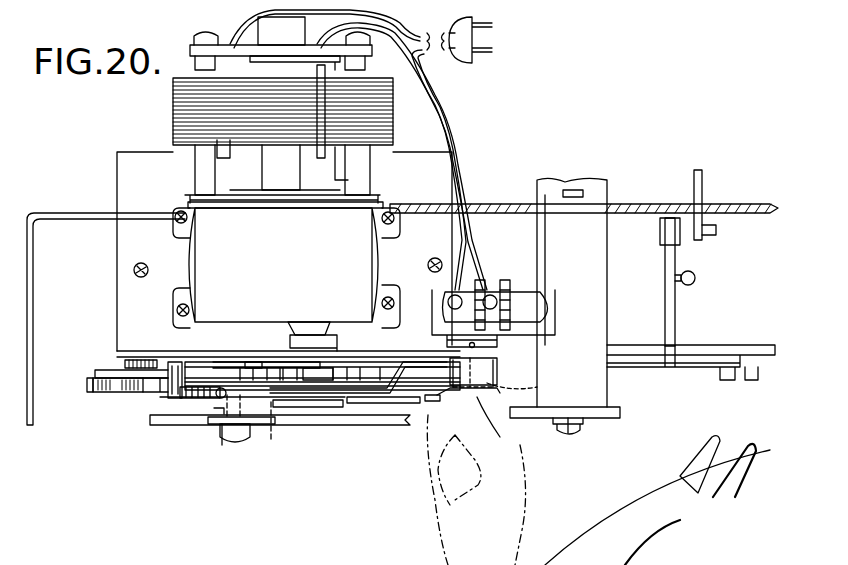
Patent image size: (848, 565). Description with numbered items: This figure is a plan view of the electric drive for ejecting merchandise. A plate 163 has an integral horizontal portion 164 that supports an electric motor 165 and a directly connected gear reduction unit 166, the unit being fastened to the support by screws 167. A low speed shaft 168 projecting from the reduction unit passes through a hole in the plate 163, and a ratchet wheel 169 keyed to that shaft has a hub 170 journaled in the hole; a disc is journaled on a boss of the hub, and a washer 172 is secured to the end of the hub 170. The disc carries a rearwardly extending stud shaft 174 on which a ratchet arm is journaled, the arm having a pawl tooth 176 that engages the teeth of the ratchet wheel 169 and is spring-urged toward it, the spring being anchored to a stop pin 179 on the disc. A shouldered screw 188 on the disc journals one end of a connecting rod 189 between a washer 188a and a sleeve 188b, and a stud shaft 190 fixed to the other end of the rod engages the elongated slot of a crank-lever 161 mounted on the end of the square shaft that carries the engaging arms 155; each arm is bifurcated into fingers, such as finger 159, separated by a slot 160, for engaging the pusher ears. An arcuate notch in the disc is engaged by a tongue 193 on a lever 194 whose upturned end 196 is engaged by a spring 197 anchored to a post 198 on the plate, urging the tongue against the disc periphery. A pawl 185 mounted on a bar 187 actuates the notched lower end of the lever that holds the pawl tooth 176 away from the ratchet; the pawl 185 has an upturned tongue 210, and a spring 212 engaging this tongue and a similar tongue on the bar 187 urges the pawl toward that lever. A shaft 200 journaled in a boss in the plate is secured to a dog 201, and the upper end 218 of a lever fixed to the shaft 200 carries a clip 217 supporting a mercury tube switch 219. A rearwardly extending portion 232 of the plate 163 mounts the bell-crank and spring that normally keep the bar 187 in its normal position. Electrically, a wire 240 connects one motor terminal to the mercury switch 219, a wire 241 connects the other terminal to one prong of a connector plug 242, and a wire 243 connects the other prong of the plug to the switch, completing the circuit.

The engaging arms 155 is at (618, 497).
The finger 159 is at (698, 446).
The slot 160 is at (730, 447).
The crank-lever 161 is at (602, 401).
The plate 163 is at (120, 358).
The horizontal portion 164 is at (125, 307).
The electric motor 165 is at (173, 118).
The gear reduction unit 166 is at (200, 243).
The screws 167 is at (178, 215).
The low speed shaft 168 is at (306, 326).
The ratchet wheel 169 is at (318, 370).
The hub 170 is at (321, 335).
The washer 172 is at (310, 407).
The stud shaft 174 is at (217, 372).
The pawl tooth 176 is at (271, 408).
The stop pin 179 is at (250, 372).
The pawl 185 is at (87, 384).
The bar 187 is at (93, 373).
The shouldered screw 188 is at (234, 447).
The washer 188a is at (225, 427).
The sleeve 188b is at (222, 400).
The connecting rod 189 is at (603, 422).
The stud shaft 190 is at (570, 434).
The tongue 193 is at (380, 426).
The lever 194 is at (388, 367).
The upturned end 196 is at (192, 396).
The spring 197 is at (203, 395).
The post 198 is at (170, 384).
The shaft 200 is at (537, 396).
The dog 201 is at (497, 413).
The upturned tongue 210 is at (437, 402).
The spring 212 is at (112, 386).
The clip 217 is at (455, 331).
The upper end of lever 218 is at (575, 347).
The mercury tube switch 219 is at (518, 290).
The rearwardly extending portion 232 is at (666, 264).
The wire 240 is at (428, 116).
The wire 241 is at (392, 17).
The connector plug 242 is at (462, 63).
The wire 243 is at (462, 123).